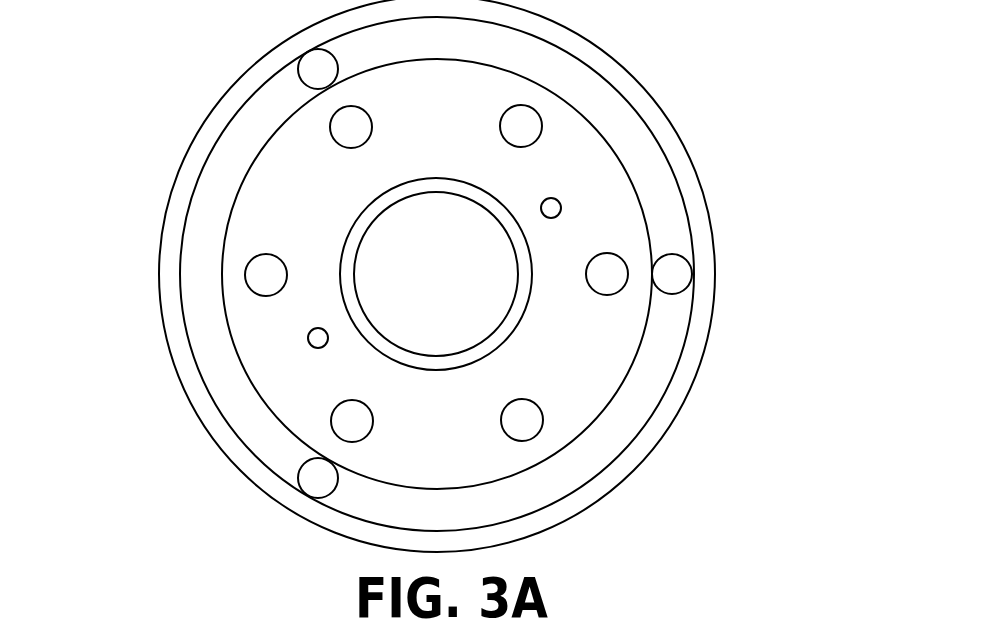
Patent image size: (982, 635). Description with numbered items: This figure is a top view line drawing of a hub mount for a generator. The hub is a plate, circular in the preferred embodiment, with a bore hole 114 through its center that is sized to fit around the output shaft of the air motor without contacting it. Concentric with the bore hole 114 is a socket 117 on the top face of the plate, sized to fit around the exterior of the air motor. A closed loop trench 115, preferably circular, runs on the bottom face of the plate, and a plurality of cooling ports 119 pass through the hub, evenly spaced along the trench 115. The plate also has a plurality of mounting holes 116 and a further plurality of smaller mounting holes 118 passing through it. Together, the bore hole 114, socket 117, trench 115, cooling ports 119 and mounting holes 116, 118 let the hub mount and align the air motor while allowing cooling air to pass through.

The bore hole 114 is at (437, 274).
The closed loop trench 115 is at (193, 227).
The mounting holes 116 is at (607, 274).
The socket 117 is at (558, 367).
The mounting holes 118 is at (551, 208).
The cooling ports 119 is at (672, 274).